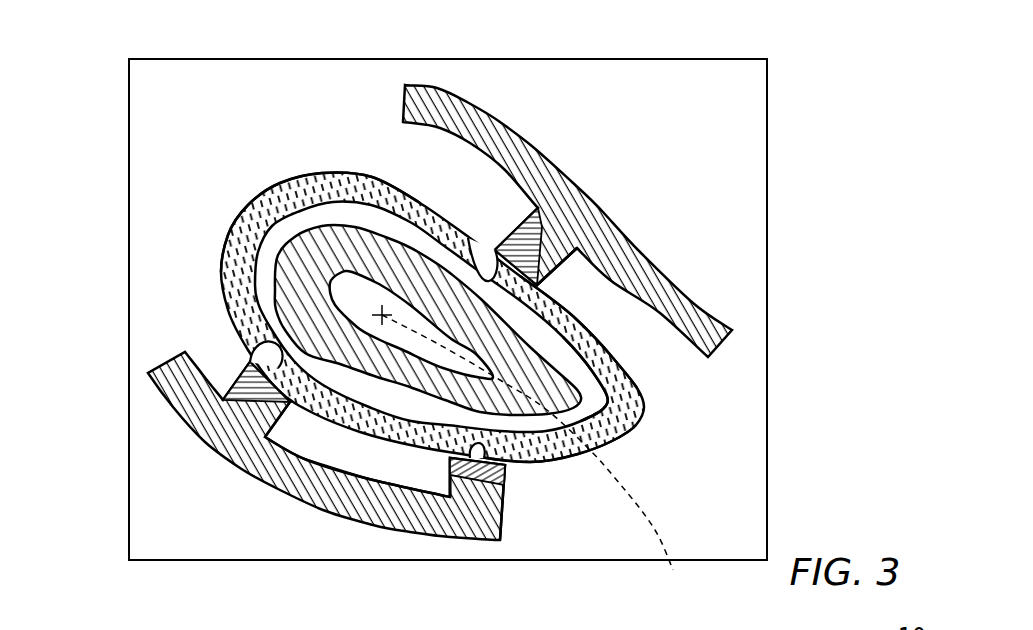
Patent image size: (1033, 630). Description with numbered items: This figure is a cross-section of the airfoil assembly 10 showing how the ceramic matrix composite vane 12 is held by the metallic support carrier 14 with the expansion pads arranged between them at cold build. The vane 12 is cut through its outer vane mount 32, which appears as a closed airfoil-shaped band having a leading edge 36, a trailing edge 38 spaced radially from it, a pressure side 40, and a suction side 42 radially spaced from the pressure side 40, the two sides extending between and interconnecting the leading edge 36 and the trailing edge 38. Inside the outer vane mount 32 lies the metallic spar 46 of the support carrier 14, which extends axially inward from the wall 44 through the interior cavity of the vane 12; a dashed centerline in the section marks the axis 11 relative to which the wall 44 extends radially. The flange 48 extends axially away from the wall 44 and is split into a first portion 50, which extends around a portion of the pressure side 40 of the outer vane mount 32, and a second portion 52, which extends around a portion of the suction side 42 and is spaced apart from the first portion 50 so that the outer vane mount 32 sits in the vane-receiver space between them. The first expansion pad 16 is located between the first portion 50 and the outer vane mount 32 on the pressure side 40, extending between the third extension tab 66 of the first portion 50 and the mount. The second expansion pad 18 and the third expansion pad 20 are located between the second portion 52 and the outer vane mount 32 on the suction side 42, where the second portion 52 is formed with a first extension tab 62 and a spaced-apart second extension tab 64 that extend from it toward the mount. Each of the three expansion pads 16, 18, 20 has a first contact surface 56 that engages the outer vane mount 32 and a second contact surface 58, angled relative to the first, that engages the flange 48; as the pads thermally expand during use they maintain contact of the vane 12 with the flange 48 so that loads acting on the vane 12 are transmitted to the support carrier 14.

The airfoil assembly 10 is at (827, 115).
The axis 11 is at (534, 458).
The vane 12 is at (296, 128).
The support carrier 14 is at (773, 456).
The first expansion pad 16 is at (514, 229).
The second expansion pad 18 is at (217, 393).
The third expansion pad 20 is at (508, 478).
The outer vane mount 32 is at (323, 148).
The leading edge 36 is at (268, 188).
The trailing edge 38 is at (593, 462).
The pressure side 40 is at (586, 333).
The suction side 42 is at (362, 432).
The wall 44 is at (705, 504).
The metallic spar 46 is at (590, 402).
The flange 48 is at (708, 405).
The first portion 50 is at (487, 98).
The second portion 52 is at (200, 447).
The first contact surface 56 is at (252, 353).
The second contact surface 58 is at (542, 252).
The first extension tab 62 is at (291, 428).
The second extension tab 64 is at (447, 473).
The third extension tab 66 is at (572, 266).